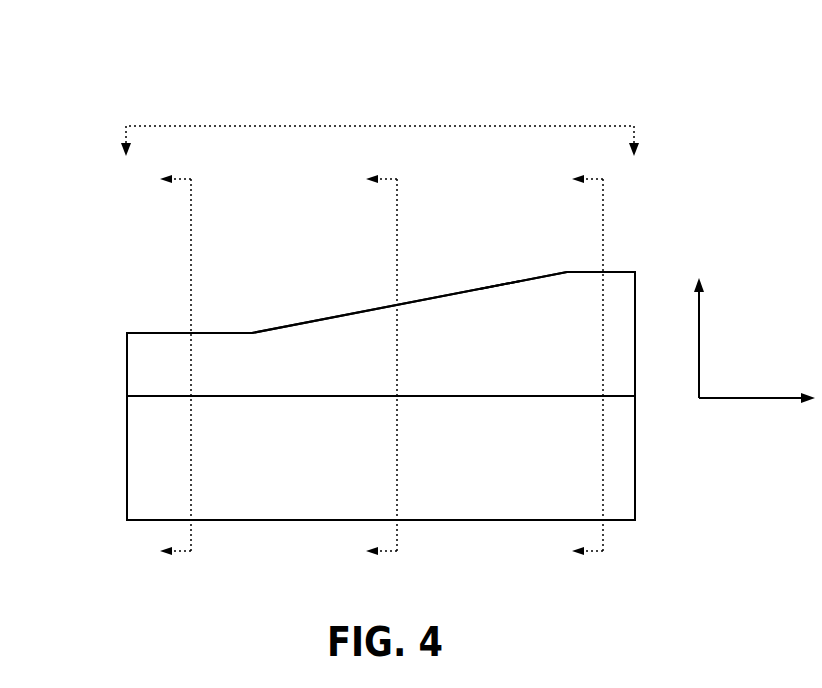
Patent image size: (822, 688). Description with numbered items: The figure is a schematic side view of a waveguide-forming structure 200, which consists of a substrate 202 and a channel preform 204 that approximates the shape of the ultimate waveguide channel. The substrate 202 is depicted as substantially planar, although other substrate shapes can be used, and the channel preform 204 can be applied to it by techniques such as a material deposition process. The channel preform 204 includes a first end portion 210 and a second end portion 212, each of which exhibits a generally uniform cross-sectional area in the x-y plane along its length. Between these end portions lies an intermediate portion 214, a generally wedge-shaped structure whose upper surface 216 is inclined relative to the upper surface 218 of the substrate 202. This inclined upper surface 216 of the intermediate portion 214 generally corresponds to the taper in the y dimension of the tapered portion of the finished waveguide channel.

The waveguide-forming structure 200 is at (132, 94).
The substrate 202 is at (127, 467).
The channel preform 204 is at (127, 357).
The first end portion 210 is at (174, 301).
The second end portion 212 is at (621, 243).
The intermediate portion 214 is at (361, 281).
The upper surface of intermediate portion 216 is at (500, 283).
The upper surface of substrate 218 is at (510, 396).